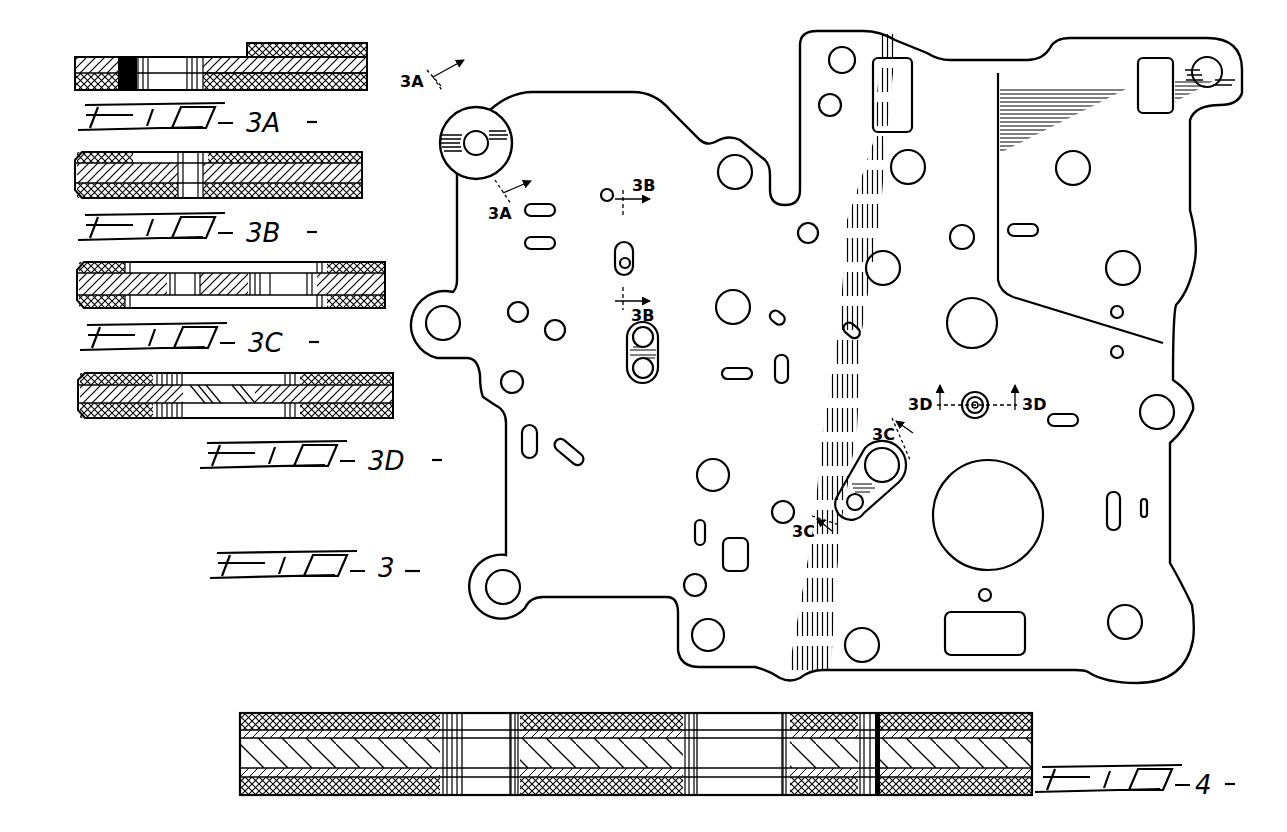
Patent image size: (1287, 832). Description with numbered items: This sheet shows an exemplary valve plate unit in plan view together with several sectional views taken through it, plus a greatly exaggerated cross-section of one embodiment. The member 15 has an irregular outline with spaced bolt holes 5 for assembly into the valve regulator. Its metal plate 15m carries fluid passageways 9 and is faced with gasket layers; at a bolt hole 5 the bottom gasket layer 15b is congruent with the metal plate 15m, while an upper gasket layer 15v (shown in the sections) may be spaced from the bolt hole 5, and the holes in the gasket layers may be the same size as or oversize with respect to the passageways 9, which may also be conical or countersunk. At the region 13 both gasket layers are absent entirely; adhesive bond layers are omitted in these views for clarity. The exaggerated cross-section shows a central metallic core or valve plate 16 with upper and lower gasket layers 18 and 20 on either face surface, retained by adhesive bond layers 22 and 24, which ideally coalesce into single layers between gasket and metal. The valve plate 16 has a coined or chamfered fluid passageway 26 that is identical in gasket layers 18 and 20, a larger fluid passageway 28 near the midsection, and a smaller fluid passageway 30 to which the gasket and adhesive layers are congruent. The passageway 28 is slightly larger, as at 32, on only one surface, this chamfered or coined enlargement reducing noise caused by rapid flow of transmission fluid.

In FIG. 3, the bolt hole 5 is at (1198, 66).
In FIG. 3A, the bolt hole 5 is at (155, 63).
In FIG. 3B, the fluid passageway 9 is at (193, 167).
In FIG. 3C, the fluid passageway 9 is at (183, 283).
In FIG. 3D, the fluid passageway 9 is at (242, 393).
In FIG. 3, the region of total absence of gasket layers 13 is at (1027, 78).
In FIG. 3, the member 15 is at (1182, 576).
In FIG. 3A, the member 15 is at (112, 52).
In FIG. 3B, the member 15 is at (366, 192).
In FIG. 3C, the member 15 is at (374, 256).
In FIG. 3D, the member 15 is at (122, 428).
In FIG. 3A, the metal plate 15m is at (216, 63).
In FIG. 3B, the metal plate 15m is at (360, 167).
In FIG. 3C, the metal plate 15m is at (385, 283).
In FIG. 3D, the metal plate 15m is at (393, 397).
In FIG. 3A, the valve layer 15v is at (353, 47).
In FIG. 3D, the valve layer 15v is at (393, 378).
In FIG. 3A, the bottom gasket layer 15b is at (323, 85).
In FIG. 3D, the bottom gasket layer 15b is at (340, 400).
In FIG. 4, the valve plate 16 is at (1032, 753).
In FIG. 4, the upper gasket layer 18 is at (1033, 715).
In FIG. 4, the lower gasket layer 20 is at (1032, 795).
In FIG. 4, the adhesive bond layer 22 is at (1033, 733).
In FIG. 4, the adhesive bond layer 24 is at (1033, 764).
In FIG. 4, the fluid passageway 26 is at (497, 727).
In FIG. 4, the larger fluid passageway 28 is at (722, 725).
In FIG. 4, the smaller fluid passageway 30 is at (865, 794).
In FIG. 4, the enlargement 32 is at (450, 713).